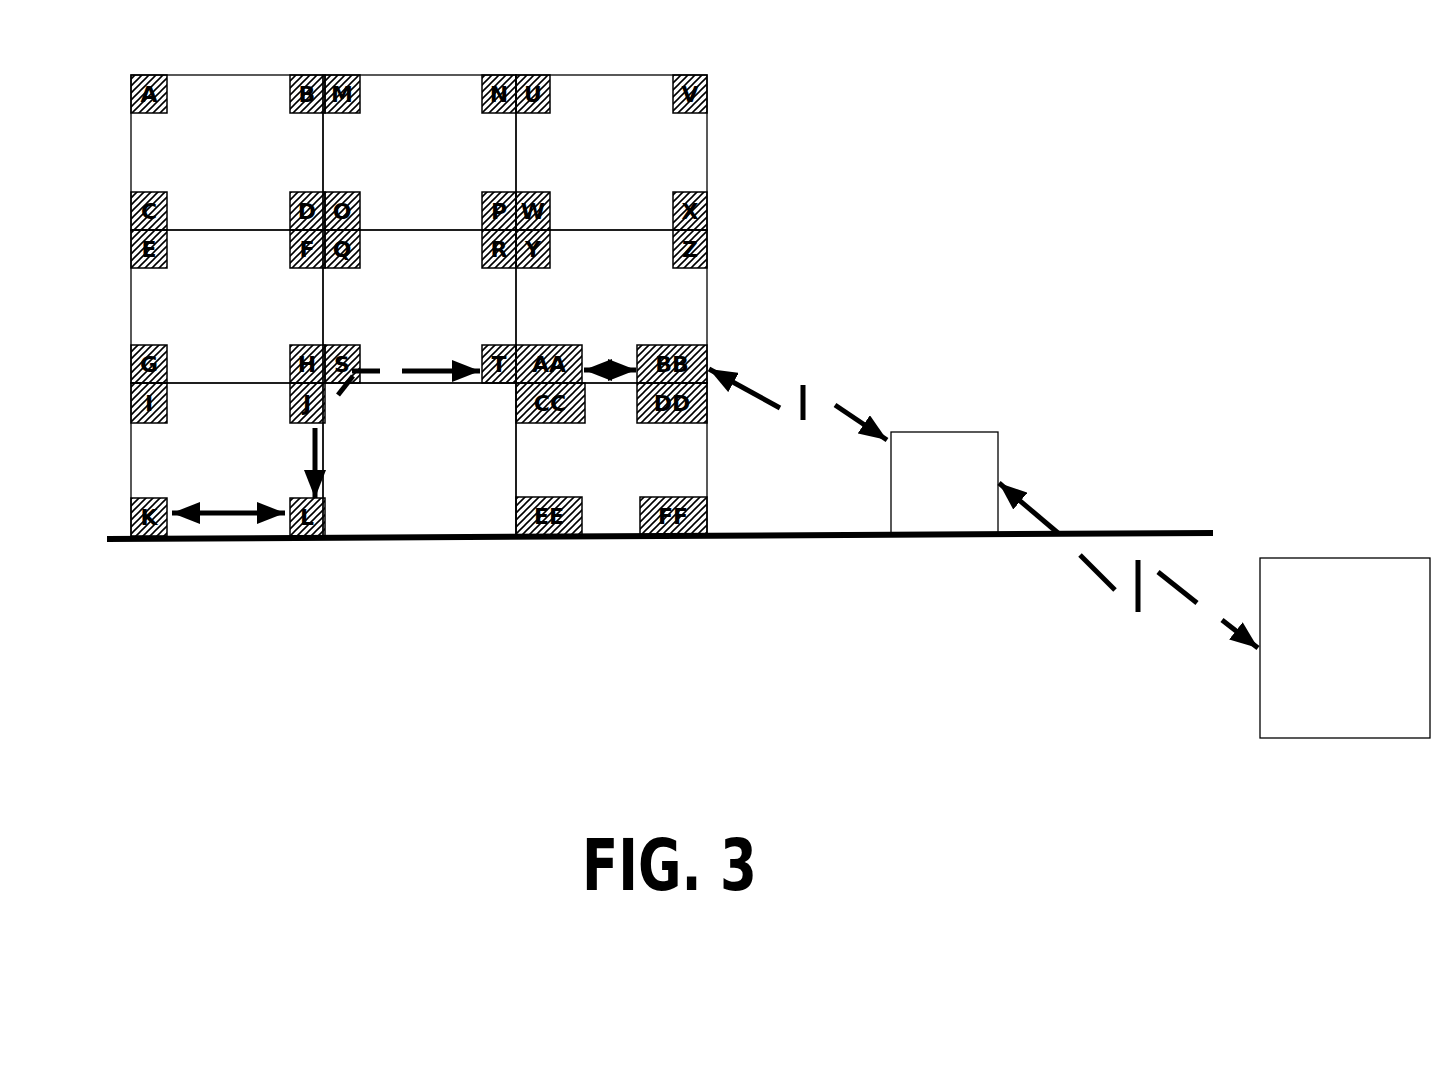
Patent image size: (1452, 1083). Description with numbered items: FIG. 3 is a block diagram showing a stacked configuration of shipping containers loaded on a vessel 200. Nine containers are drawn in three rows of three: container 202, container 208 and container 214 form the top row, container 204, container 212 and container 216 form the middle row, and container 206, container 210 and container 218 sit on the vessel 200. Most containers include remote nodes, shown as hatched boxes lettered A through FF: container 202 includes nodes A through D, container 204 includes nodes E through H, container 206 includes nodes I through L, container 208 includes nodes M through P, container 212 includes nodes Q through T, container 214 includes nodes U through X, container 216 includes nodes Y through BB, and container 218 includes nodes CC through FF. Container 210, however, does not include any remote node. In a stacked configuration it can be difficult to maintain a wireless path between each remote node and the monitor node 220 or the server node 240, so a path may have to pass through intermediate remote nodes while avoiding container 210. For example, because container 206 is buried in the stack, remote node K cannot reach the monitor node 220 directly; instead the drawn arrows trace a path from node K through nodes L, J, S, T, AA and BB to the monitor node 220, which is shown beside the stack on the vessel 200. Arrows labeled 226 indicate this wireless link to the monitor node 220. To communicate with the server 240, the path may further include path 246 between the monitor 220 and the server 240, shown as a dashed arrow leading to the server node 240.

The vessel 200 is at (660, 569).
The container 202 is at (227, 152).
The container 204 is at (227, 306).
The container 206 is at (227, 460).
The container 208 is at (419, 152).
The container 210 is at (419, 459).
The container 212 is at (419, 306).
The container 214 is at (611, 152).
The container 216 is at (611, 306).
The container 218 is at (611, 459).
The monitor node 220 is at (944, 482).
The wireless communication link 226 is at (824, 389).
The server node 240 is at (1345, 648).
The path 246 is at (1128, 557).